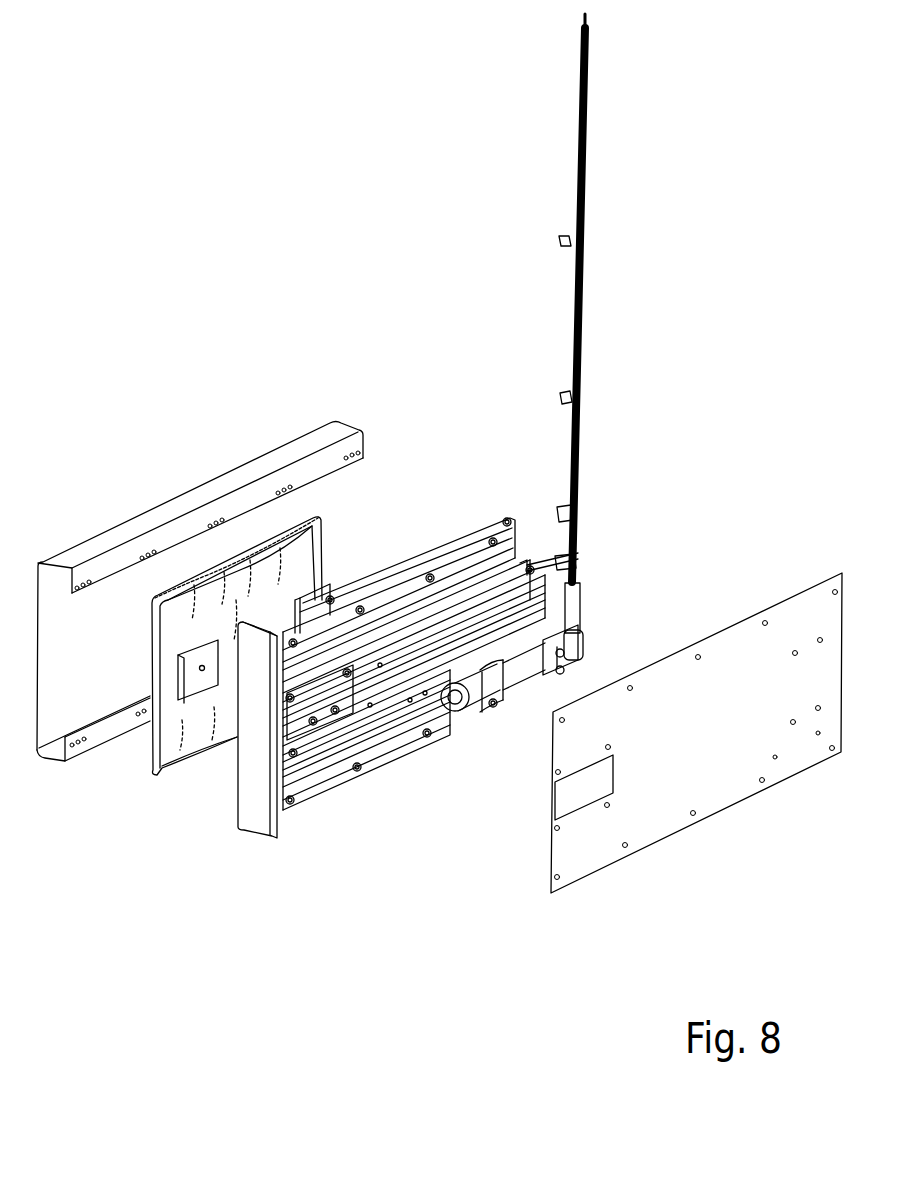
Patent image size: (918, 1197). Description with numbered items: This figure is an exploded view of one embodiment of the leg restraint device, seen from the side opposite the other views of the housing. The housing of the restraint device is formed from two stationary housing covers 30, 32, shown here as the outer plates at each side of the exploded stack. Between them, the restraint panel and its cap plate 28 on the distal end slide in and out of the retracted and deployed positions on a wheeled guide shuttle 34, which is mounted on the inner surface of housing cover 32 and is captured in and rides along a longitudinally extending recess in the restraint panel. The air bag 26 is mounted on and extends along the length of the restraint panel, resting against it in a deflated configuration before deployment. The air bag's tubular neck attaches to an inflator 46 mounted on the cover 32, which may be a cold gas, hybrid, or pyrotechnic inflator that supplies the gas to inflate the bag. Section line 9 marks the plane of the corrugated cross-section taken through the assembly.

The section line 9- 9 is at (323, 343).
The air bag 26 is at (283, 560).
The cap plate 28 is at (253, 800).
The housing cover 30 is at (790, 758).
The housing cover 32 is at (154, 517).
The wheeled guide shuttle 34 is at (305, 735).
The inflator 46 is at (475, 692).